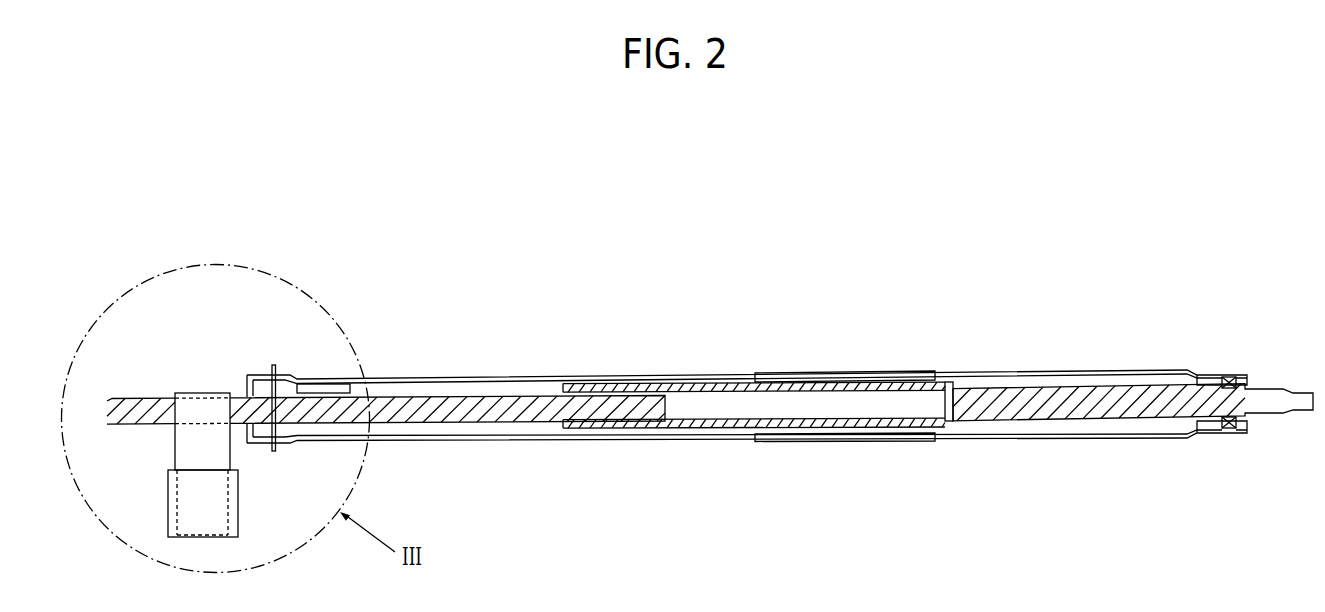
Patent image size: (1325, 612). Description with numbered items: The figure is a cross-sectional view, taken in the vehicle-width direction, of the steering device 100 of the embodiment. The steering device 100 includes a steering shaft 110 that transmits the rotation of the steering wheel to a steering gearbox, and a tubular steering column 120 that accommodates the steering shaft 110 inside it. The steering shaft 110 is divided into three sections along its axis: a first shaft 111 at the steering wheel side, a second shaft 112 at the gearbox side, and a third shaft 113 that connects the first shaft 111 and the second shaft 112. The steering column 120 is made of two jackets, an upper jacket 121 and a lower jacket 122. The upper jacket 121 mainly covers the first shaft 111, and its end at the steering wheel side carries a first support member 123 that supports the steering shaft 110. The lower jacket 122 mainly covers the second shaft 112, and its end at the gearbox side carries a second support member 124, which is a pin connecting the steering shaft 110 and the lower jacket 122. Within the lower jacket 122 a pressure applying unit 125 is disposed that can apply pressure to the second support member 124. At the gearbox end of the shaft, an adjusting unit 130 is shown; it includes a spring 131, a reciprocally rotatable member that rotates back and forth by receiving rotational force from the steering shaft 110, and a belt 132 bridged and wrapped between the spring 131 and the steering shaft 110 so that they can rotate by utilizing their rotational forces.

The steering device 100 is at (597, 262).
The steering shaft 110 is at (1022, 524).
The first shaft 111 is at (990, 422).
The second shaft 112 is at (528, 422).
The third shaft 113 is at (742, 440).
The steering column 120 is at (797, 291).
The upper jacket 121 is at (785, 372).
The lower jacket 122 is at (700, 374).
The first support member 123 is at (1227, 433).
The second support member 124 is at (272, 366).
The pressure applying unit 125 is at (322, 383).
The adjusting unit 130 is at (155, 472).
The spring 131 is at (173, 517).
The belt 132 is at (215, 488).